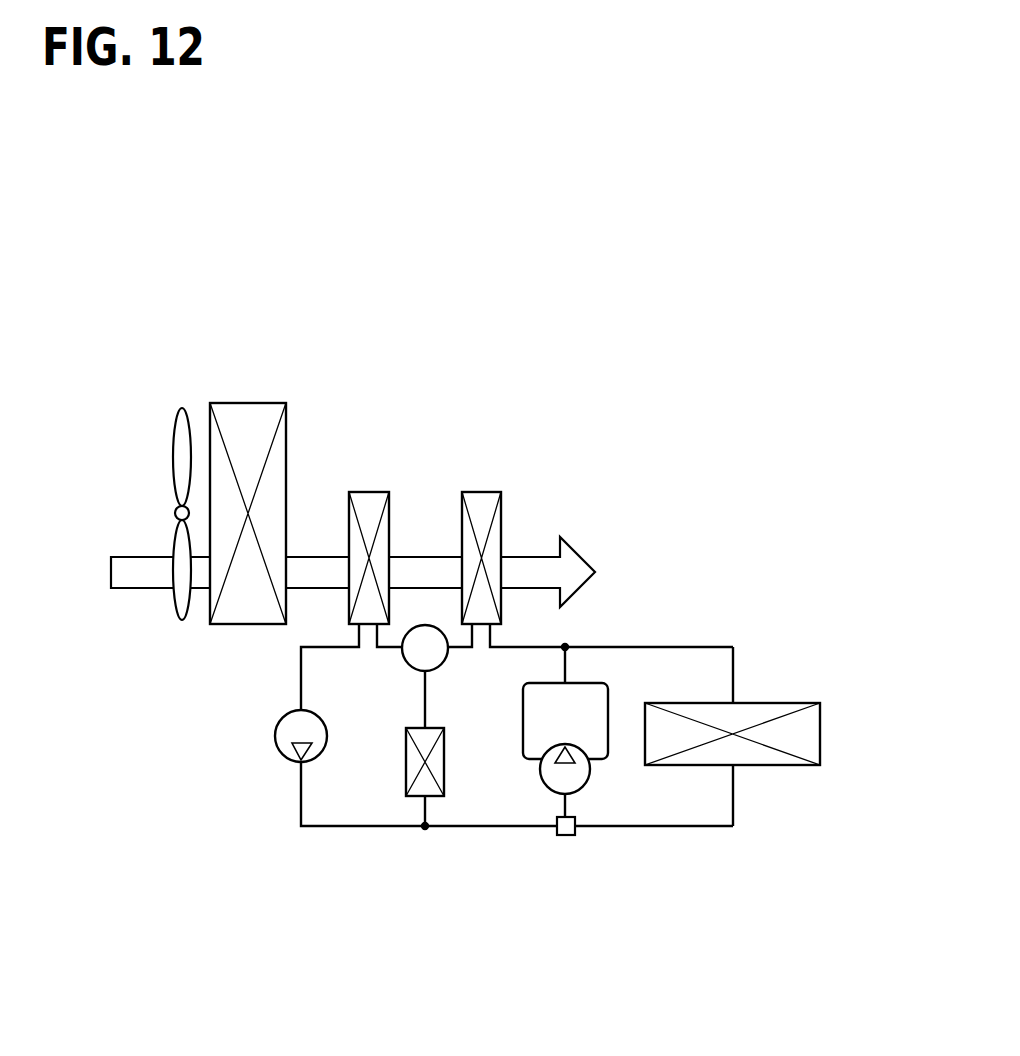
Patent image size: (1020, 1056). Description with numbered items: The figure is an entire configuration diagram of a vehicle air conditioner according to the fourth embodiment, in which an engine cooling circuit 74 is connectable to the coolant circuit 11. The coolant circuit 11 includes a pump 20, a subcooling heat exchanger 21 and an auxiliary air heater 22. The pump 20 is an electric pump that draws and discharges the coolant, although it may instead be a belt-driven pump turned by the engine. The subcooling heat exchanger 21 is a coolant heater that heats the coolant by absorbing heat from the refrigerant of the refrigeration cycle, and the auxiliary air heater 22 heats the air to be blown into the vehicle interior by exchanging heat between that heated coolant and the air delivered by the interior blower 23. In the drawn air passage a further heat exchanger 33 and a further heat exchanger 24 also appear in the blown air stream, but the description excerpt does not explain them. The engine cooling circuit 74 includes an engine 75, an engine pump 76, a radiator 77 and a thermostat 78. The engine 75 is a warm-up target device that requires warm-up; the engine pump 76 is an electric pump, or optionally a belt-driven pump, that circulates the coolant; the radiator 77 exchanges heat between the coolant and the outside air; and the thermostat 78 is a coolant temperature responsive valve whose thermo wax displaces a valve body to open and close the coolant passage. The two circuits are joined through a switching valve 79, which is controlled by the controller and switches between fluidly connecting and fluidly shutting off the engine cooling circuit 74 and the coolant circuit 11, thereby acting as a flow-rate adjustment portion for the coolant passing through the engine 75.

The coolant circuit 11 is at (366, 841).
The pump 20 is at (275, 736).
The subcooling heat exchanger 21 is at (406, 780).
The auxiliary air heater 22 is at (367, 492).
The interior blower 23 is at (182, 408).
The heater core 24 is at (480, 492).
The outdoor heat exchanger 33 is at (248, 403).
The engine cooling circuit 74 is at (663, 841).
The engine 75 is at (523, 708).
The engine pump 76 is at (541, 782).
The radiator 77 is at (820, 733).
The thermostat 78 is at (565, 836).
The switching valve 79 is at (404, 661).